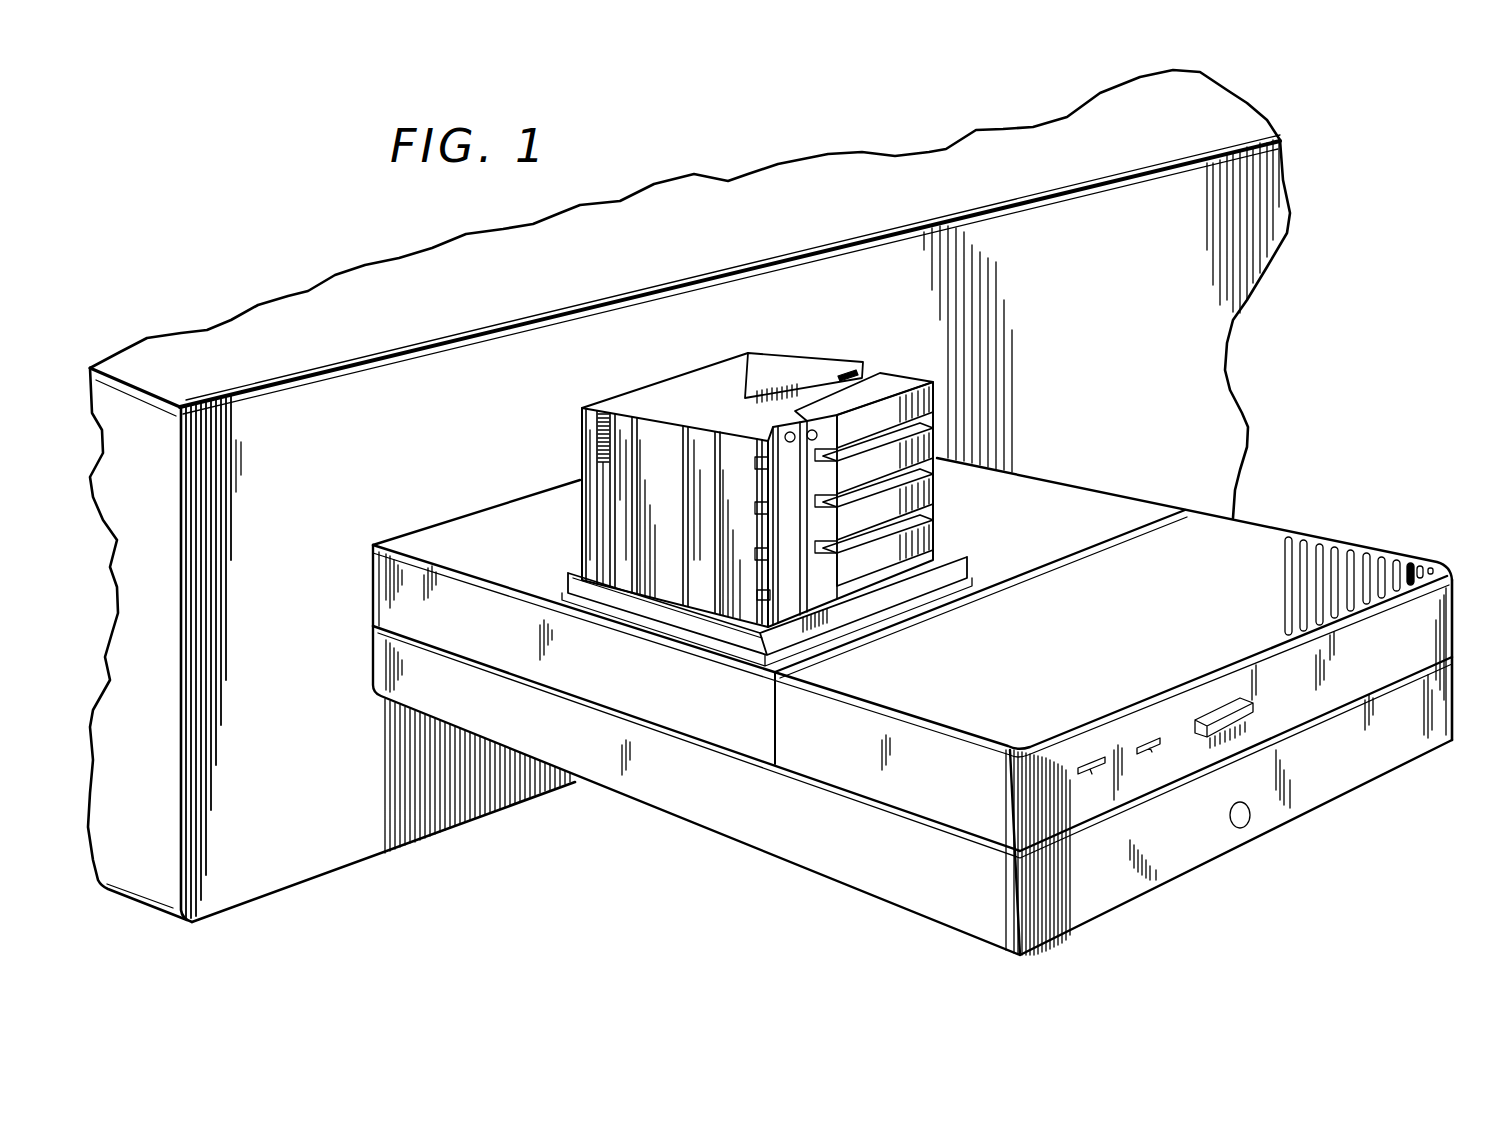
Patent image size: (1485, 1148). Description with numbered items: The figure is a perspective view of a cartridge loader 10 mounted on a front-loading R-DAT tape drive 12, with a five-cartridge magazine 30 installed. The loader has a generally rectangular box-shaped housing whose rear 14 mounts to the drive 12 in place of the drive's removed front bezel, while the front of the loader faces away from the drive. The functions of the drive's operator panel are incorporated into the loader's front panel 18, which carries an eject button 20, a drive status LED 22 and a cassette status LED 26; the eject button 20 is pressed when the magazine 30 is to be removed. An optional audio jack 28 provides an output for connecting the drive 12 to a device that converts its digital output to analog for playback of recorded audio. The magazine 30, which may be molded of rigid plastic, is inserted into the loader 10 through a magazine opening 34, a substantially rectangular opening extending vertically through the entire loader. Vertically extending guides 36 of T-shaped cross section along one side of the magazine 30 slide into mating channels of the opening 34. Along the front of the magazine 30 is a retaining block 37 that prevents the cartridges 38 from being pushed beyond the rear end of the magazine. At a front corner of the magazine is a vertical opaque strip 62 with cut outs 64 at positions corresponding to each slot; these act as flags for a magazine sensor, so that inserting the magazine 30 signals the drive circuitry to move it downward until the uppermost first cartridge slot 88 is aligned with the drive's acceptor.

The cartridge loader 10 is at (876, 687).
The tape drive 12 is at (496, 496).
The rear of the loader 14 is at (368, 656).
The front panel 18 is at (1372, 692).
The eject button 20 is at (1248, 710).
The drive status LED 22 is at (1152, 745).
The cassette status LED 26 is at (1090, 776).
The audio jack 28 is at (1246, 826).
The magazine 30 is at (777, 510).
The magazine opening 34 is at (943, 550).
The guides 36 is at (697, 594).
The retaining block 37 is at (778, 410).
The cartridges 38 is at (940, 405).
The opaque strip 62 is at (762, 425).
The cut outs 64 is at (758, 596).
The first cartridge slot 88 is at (852, 376).